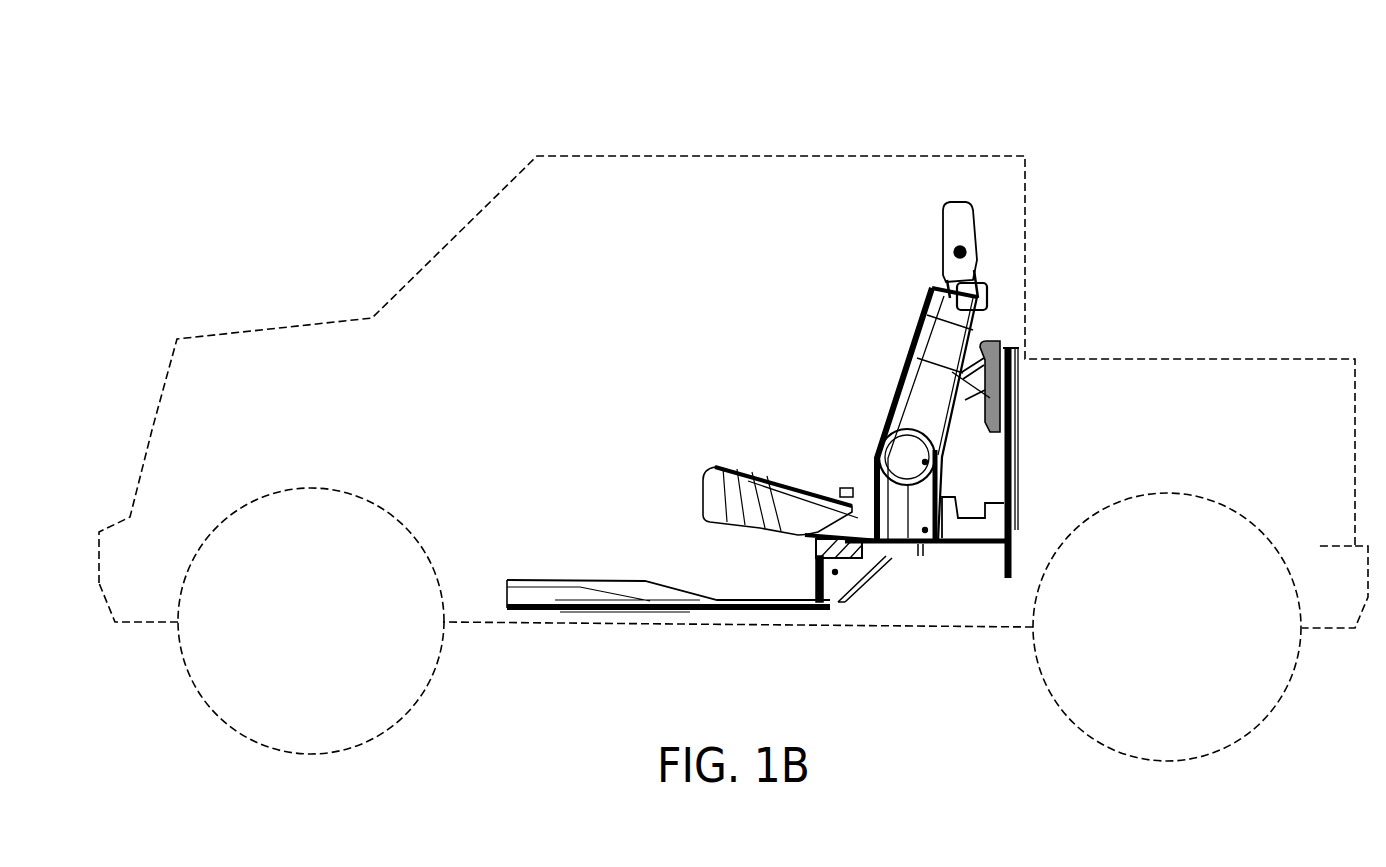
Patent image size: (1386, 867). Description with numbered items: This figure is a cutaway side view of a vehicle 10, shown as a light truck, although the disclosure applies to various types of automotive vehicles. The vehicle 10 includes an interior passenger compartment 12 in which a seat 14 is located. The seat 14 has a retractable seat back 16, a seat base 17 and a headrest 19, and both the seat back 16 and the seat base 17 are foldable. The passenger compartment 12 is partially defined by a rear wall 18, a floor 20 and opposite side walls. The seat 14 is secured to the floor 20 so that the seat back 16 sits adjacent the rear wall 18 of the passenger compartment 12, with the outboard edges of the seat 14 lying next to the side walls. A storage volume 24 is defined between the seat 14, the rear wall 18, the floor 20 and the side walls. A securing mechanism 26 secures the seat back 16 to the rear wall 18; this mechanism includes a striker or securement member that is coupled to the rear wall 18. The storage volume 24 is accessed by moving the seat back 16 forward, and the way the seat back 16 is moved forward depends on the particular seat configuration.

The vehicle 10 is at (1022, 118).
The interior passenger compartment 12 is at (995, 220).
The seat 14 is at (783, 520).
The seat back 16 is at (957, 328).
The seat base 17 is at (730, 467).
The rear wall 18 is at (1020, 441).
The headrest 19 is at (947, 205).
The floor 20 is at (647, 615).
The storage volume 24 is at (1020, 443).
The securing mechanism 26 is at (983, 340).